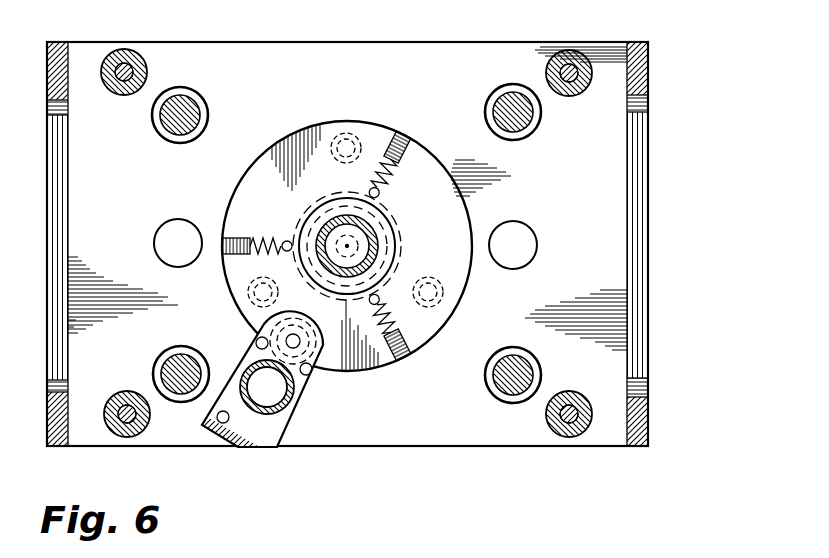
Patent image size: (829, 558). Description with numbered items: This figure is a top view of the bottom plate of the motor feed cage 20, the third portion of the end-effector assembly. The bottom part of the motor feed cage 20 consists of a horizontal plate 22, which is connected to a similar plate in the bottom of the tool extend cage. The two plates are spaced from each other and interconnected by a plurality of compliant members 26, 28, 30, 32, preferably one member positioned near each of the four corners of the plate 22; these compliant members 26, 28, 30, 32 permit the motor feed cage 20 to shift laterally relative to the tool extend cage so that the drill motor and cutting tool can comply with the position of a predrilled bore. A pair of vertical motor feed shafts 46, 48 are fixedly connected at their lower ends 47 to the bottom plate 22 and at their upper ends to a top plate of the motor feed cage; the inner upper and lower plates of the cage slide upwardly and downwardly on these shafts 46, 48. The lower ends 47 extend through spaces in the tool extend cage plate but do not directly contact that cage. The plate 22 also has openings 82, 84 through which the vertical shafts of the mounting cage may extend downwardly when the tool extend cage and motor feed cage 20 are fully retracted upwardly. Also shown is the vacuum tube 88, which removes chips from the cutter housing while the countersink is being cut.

The motor feed cage 20 is at (654, 78).
The horizontal plate 22 is at (356, 98).
The compliant member 26 is at (578, 438).
The compliant member 28 is at (580, 58).
The compliant member 30 is at (137, 62).
The compliant member 32 is at (105, 436).
The motor feed shaft 46 is at (165, 118).
The lower end 47 is at (165, 121).
The motor feed shaft 48 is at (522, 127).
The opening 82 is at (536, 360).
The opening 84 is at (165, 358).
The vacuum tube 88 is at (287, 410).